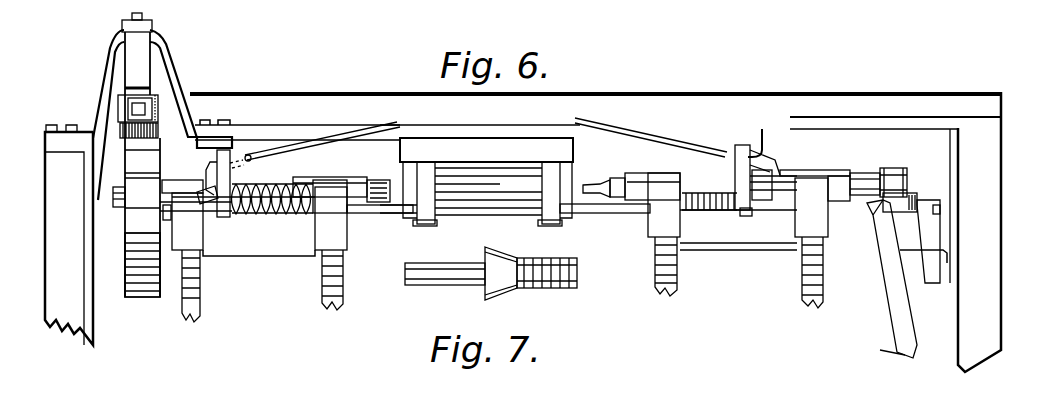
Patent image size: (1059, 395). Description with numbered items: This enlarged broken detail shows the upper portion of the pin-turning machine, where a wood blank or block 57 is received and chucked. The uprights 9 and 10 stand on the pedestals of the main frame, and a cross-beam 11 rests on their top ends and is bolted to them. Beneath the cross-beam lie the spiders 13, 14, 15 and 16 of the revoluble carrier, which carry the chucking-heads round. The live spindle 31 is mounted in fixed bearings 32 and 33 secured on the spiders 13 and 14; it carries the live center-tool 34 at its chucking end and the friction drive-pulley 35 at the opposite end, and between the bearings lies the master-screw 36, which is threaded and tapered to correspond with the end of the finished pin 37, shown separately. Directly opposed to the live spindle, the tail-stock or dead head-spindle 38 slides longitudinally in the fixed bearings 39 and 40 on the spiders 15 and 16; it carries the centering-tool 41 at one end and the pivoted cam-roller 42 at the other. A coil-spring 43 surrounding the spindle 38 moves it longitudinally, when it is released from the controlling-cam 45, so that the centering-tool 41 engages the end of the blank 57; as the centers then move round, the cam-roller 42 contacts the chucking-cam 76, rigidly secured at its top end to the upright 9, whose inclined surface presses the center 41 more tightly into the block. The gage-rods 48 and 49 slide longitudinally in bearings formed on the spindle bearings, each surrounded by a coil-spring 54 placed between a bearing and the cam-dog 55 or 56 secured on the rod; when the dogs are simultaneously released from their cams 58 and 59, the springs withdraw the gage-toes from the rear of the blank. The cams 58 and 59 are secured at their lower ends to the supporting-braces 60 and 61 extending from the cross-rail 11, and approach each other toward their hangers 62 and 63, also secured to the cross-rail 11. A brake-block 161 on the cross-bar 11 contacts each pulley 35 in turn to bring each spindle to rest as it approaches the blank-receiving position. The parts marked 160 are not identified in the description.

In FIG. 6, the upright 9 is at (895, 232).
In FIG. 6, the upright 10 is at (69, 235).
In FIG. 6, the cross-beam 11 is at (668, 93).
In FIG. 6, the carrier spider 13 is at (807, 297).
In FIG. 6, the carrier spider 14 is at (667, 287).
In FIG. 6, the carrier spider 15 is at (331, 300).
In FIG. 6, the carrier spider 16 is at (196, 312).
In FIG. 6, the live spindle 31 is at (113, 205).
In FIG. 6, the fixed bearing 32 is at (350, 178).
In FIG. 6, the fixed bearing 33 is at (150, 155).
In FIG. 6, the live center-tool 34 is at (387, 217).
In FIG. 6, the friction drive-pulley 35 is at (138, 298).
In FIG. 6, the master-screw 36 is at (277, 183).
In FIG. 7, the pin 37 is at (457, 285).
In FIG. 6, the dead head-spindle 38 is at (885, 170).
In FIG. 6, the fixed bearing 39 is at (816, 175).
In FIG. 6, the fixed bearing 40 is at (680, 185).
In FIG. 6, the centering-tool 41 is at (600, 183).
In FIG. 6, the cam-roller 42 is at (912, 198).
In FIG. 6, the coil-spring 43 is at (783, 173).
In FIG. 6, the controlling-cam 45 is at (892, 315).
In FIG. 6, the gage-rod 48 is at (375, 215).
In FIG. 6, the gage-rod 49 is at (602, 213).
In FIG. 6, the coil-spring 54 is at (236, 213).
In FIG. 6, the cam-dog 55 is at (235, 177).
In FIG. 6, the cam-dog 56 is at (743, 210).
In FIG. 6, the blank or block 57 is at (450, 182).
In FIG. 6, the cam 58 is at (168, 153).
In FIG. 6, the cam 59 is at (757, 208).
In FIG. 6, the supporting-brace 60 is at (322, 142).
In FIG. 6, the supporting-brace 61 is at (647, 137).
In FIG. 6, the supporting-hanger 62 is at (232, 136).
In FIG. 6, the supporting-hanger 63 is at (767, 152).
In FIG. 6, the chucking-cam 76 is at (943, 200).
In FIG. 6, the foot 160 is at (418, 226).
In FIG. 6, the brake-block 161 is at (157, 125).